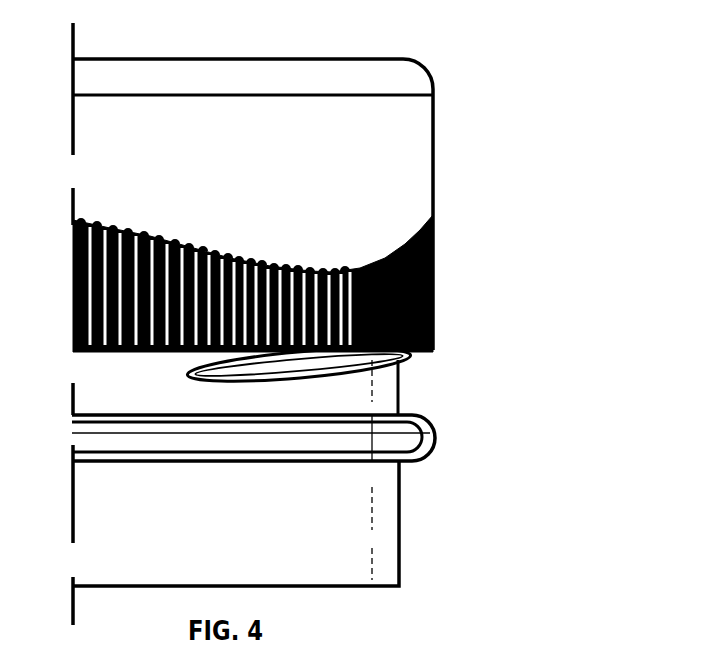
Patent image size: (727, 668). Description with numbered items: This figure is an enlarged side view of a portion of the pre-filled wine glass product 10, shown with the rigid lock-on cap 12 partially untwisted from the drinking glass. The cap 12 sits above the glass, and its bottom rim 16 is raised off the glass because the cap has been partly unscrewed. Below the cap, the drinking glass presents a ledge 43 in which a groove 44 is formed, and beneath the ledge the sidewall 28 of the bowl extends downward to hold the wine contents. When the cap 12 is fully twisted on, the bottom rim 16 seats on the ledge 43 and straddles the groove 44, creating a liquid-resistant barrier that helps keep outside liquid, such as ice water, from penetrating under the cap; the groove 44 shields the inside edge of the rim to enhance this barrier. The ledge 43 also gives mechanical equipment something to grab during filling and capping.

The pre-filled wine glass product 10 is at (503, 237).
The cap 12 is at (437, 172).
The bottom rim 16 is at (410, 356).
The sidewall 28 is at (270, 514).
The ledge 43 is at (437, 439).
The groove 44 is at (417, 420).